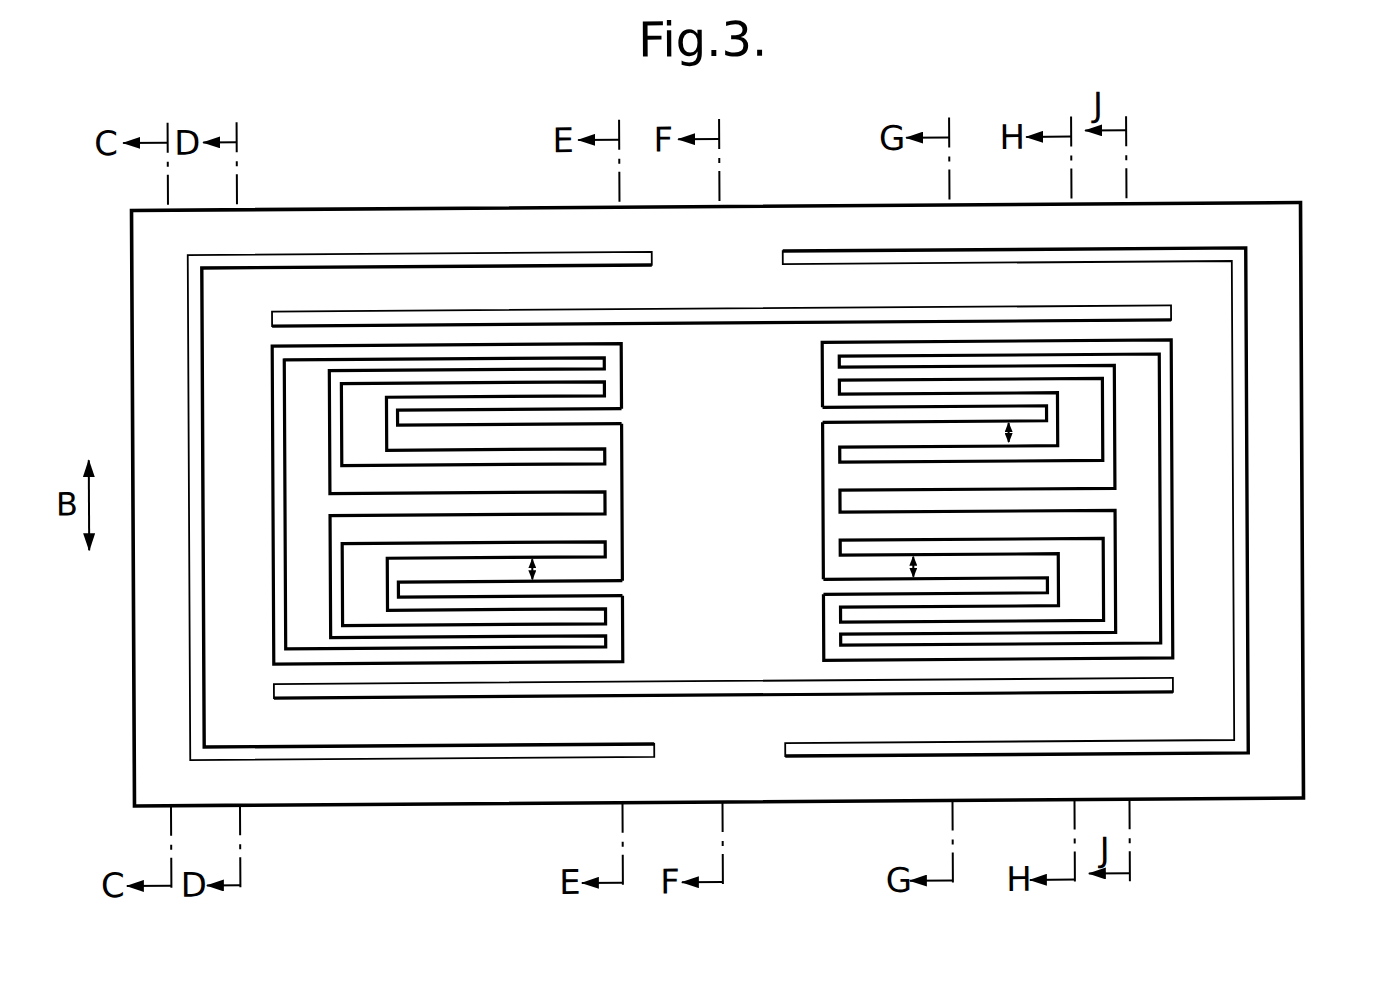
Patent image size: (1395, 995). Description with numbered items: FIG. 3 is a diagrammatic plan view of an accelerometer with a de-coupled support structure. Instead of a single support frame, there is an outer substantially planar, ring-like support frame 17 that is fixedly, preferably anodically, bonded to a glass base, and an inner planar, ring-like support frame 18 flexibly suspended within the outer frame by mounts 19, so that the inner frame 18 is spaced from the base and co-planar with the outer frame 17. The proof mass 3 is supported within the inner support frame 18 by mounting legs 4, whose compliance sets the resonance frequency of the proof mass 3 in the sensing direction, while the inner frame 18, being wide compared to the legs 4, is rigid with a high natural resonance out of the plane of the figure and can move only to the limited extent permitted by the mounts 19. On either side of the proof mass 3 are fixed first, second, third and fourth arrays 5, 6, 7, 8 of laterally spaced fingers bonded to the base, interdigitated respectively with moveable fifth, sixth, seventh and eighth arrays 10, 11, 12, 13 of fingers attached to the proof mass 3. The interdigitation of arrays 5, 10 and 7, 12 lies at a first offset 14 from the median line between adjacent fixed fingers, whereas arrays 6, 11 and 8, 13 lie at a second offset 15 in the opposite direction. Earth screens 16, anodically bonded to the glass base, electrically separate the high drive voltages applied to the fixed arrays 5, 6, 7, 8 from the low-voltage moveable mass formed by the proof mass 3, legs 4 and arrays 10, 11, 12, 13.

The proof mass 3 is at (708, 514).
The mounting legs 4 is at (375, 337).
The first array 5 is at (373, 437).
The second array 6 is at (375, 595).
The third array 7 is at (1072, 447).
The fourth array 8 is at (1075, 605).
The fifth array 10 is at (472, 419).
The sixth array 11 is at (477, 594).
The seventh array 12 is at (1005, 404).
The eighth array 13 is at (943, 590).
The first offset 14 is at (518, 405).
The second offset 15 is at (1012, 434).
The earth screens 16 is at (307, 388).
The outer support frame 17 is at (155, 241).
The inner support frame 18 is at (220, 311).
The mounts 19 is at (745, 266).